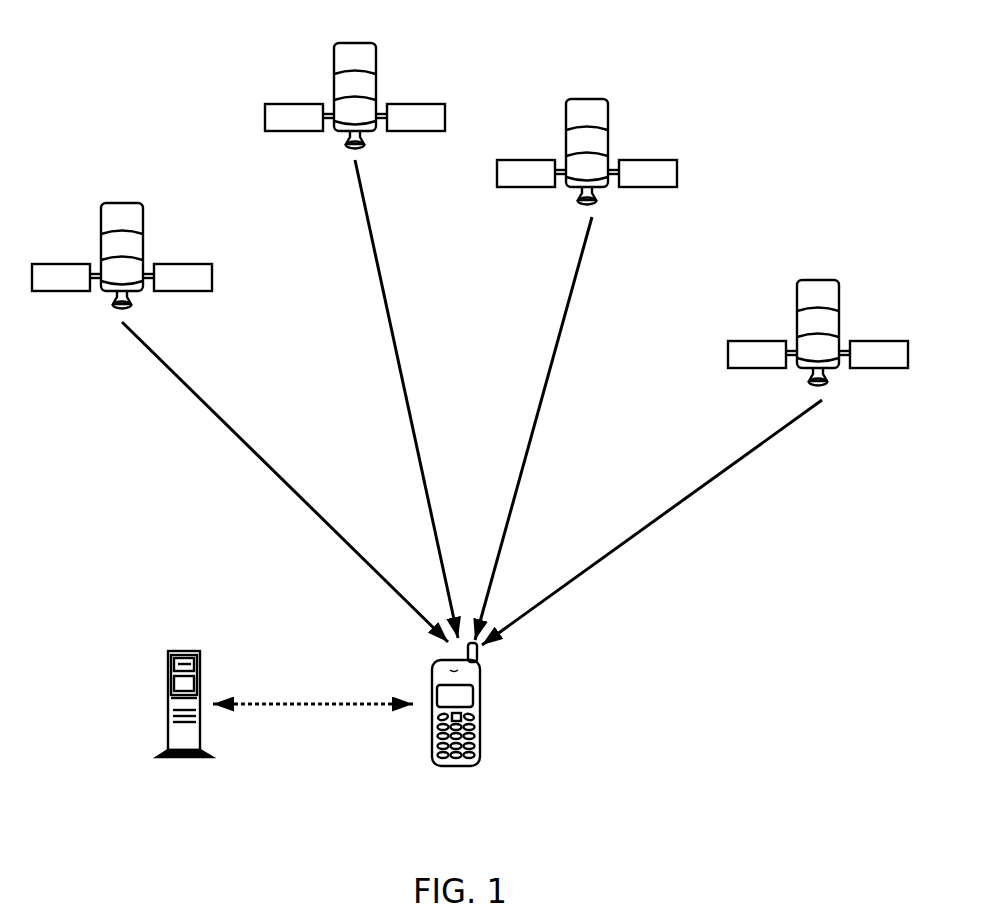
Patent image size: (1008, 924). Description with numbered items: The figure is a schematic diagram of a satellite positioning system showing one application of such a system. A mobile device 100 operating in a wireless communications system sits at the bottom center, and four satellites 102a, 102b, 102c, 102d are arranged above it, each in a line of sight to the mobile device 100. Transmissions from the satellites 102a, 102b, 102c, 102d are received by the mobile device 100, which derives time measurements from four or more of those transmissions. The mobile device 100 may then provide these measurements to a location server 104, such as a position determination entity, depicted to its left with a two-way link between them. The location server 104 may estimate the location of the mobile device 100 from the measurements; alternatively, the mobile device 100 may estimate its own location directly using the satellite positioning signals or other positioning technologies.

The mobile device 100 is at (460, 766).
The satellite 102a is at (119, 203).
The satellite 102b is at (355, 43).
The satellite 102c is at (585, 99).
The satellite 102d is at (816, 280).
The location server 104 is at (175, 651).